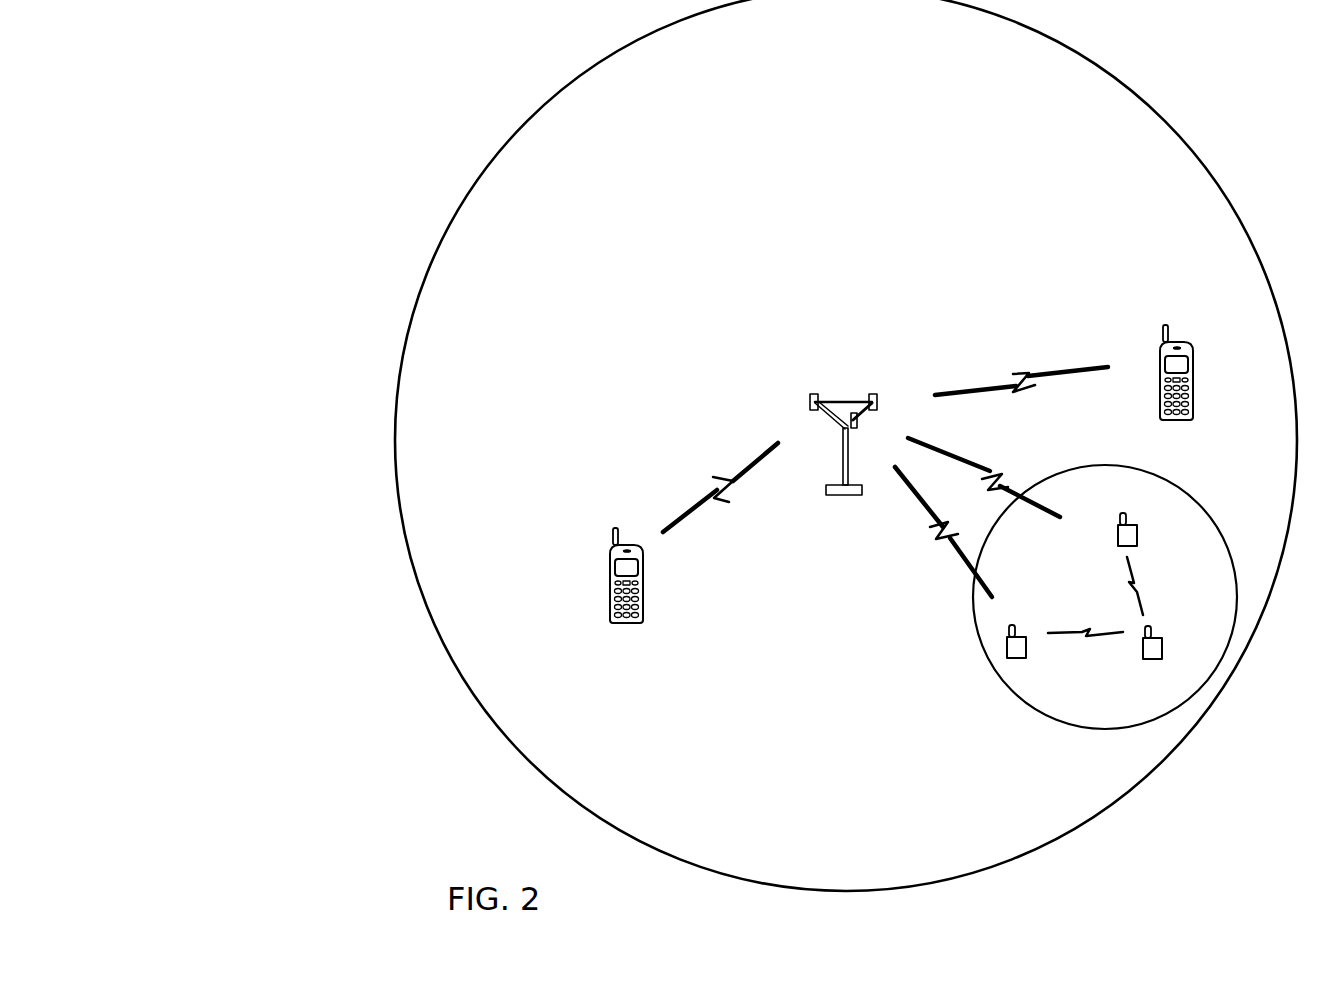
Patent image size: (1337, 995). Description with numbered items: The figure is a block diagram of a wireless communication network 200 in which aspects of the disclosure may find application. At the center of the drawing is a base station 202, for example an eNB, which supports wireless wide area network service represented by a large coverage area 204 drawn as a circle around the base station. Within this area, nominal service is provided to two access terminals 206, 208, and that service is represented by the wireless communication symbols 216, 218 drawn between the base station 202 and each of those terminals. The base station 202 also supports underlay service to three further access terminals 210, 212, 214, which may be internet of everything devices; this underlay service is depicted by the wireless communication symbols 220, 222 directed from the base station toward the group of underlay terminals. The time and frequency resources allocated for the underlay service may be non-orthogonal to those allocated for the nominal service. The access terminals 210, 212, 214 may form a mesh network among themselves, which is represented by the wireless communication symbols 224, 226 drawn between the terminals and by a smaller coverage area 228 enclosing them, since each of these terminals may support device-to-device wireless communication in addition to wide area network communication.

The wireless communication network 200 is at (292, 122).
The base station 202 is at (843, 400).
The coverage area 204 is at (1203, 170).
The access terminal 206 is at (640, 622).
The access terminal 208 is at (1185, 340).
The access terminal 210 is at (1017, 658).
The access terminal 212 is at (1138, 528).
The access terminal 214 is at (1161, 641).
The wireless communication symbol 216 is at (750, 468).
The wireless communication symbol 218 is at (1023, 375).
The wireless communication symbol 220 is at (940, 540).
The wireless communication symbol 222 is at (997, 478).
The wireless communication symbol 224 is at (1137, 585).
The wireless communication symbol 226 is at (1057, 632).
The coverage area 228 is at (1185, 492).